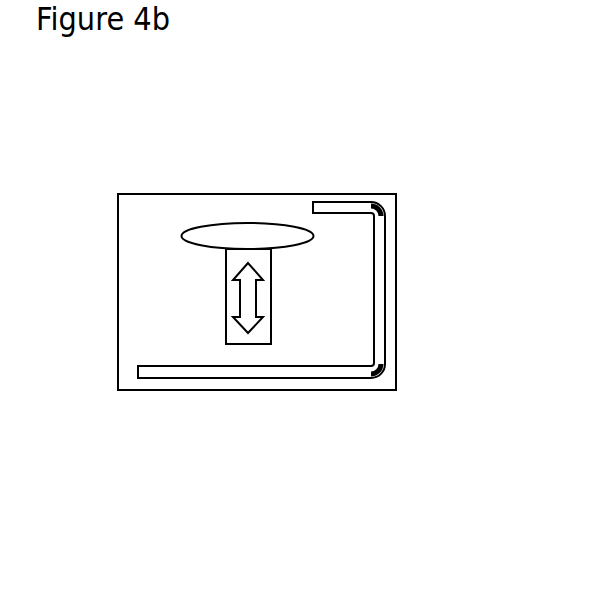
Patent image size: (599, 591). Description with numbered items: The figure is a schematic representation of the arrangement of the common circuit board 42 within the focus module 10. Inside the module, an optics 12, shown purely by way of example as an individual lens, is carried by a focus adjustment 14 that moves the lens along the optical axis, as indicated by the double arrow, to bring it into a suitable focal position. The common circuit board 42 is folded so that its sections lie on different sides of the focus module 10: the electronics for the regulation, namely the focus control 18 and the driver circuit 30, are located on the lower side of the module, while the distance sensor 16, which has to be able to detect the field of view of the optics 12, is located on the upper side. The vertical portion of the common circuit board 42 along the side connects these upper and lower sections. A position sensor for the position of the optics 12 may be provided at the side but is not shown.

The focus module 10 is at (262, 157).
The optics 12 is at (206, 238).
The focus adjustment 14 is at (224, 301).
The distance sensor 16 is at (336, 207).
The focus control 18 is at (330, 373).
The driver circuit 30 is at (254, 372).
The common circuit board 42 is at (385, 287).